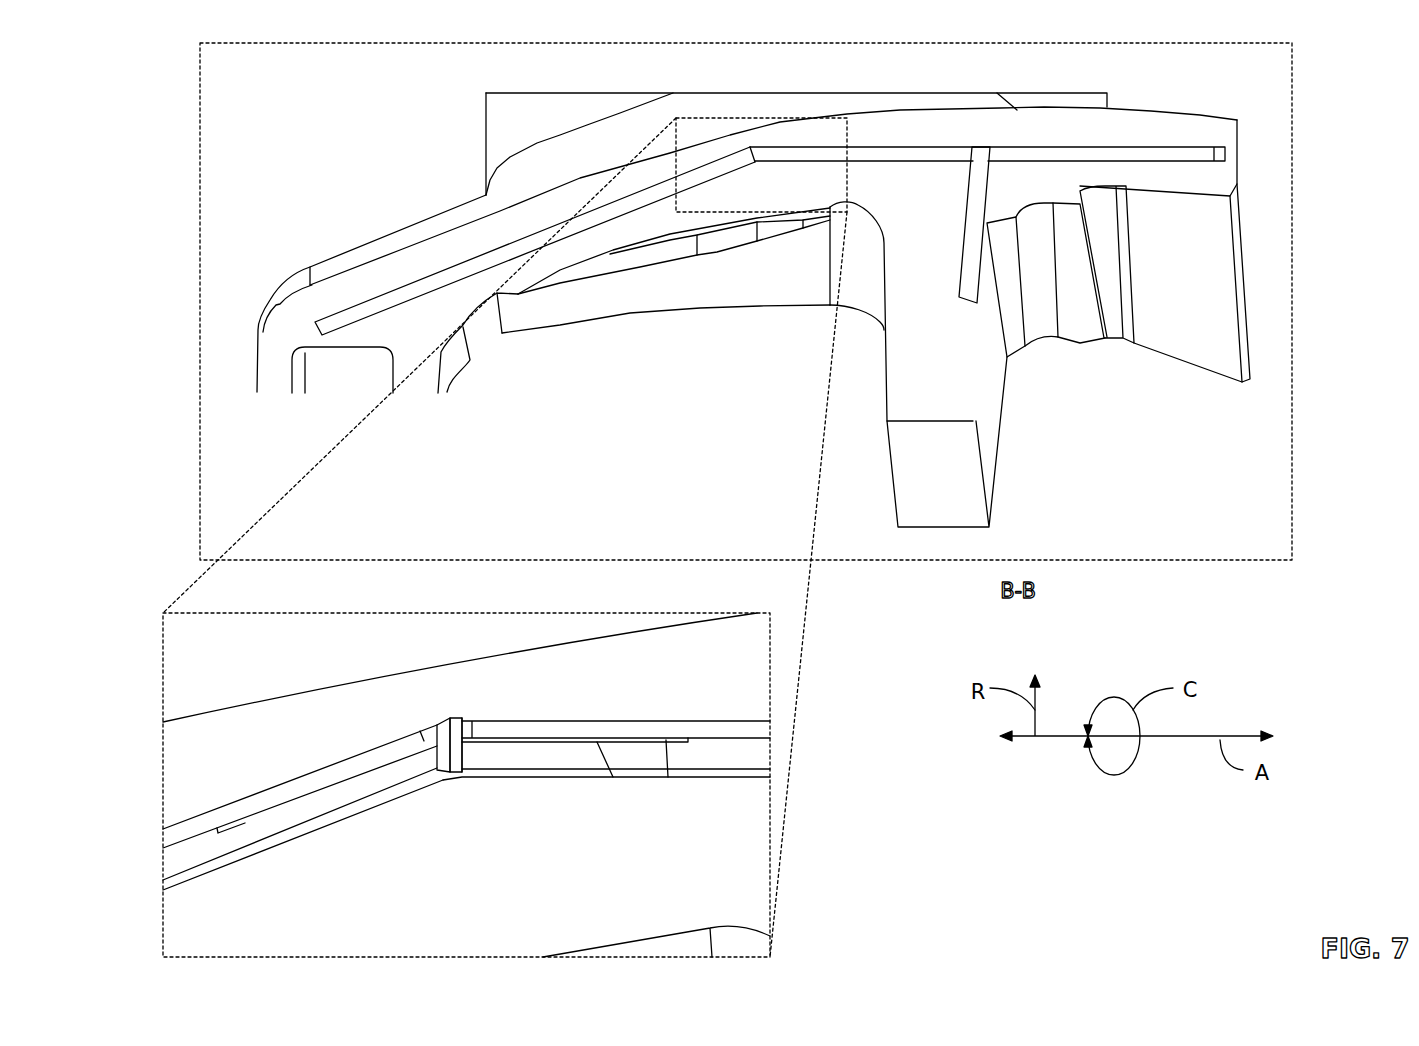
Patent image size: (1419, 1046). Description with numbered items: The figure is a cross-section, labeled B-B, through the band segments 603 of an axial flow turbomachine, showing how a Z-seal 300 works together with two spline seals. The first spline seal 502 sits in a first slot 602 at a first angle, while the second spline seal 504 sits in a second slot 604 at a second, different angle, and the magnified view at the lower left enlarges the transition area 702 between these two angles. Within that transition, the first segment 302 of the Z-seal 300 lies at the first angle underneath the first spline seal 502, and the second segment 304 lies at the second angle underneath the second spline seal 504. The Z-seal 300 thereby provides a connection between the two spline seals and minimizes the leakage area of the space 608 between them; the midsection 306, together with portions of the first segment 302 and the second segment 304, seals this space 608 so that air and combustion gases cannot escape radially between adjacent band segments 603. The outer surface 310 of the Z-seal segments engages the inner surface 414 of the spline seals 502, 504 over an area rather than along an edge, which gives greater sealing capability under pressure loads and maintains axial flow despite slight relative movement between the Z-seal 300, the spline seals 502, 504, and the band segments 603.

The Z-seal 300 is at (247, 837).
The first segment of the Z-seal 302 is at (333, 812).
The second segment of the Z-seal 304 is at (615, 778).
The midsection 306 is at (460, 741).
The outer surface of the Z-seal 310 is at (573, 722).
The inner surface 414 is at (377, 744).
The first spline seal 502 is at (580, 212).
The second spline seal 504 is at (1027, 147).
The first slot 602 is at (427, 285).
The band segments 603 is at (418, 222).
The second slot 604 is at (1195, 142).
The space 608 is at (461, 711).
The transition area 702 is at (702, 117).